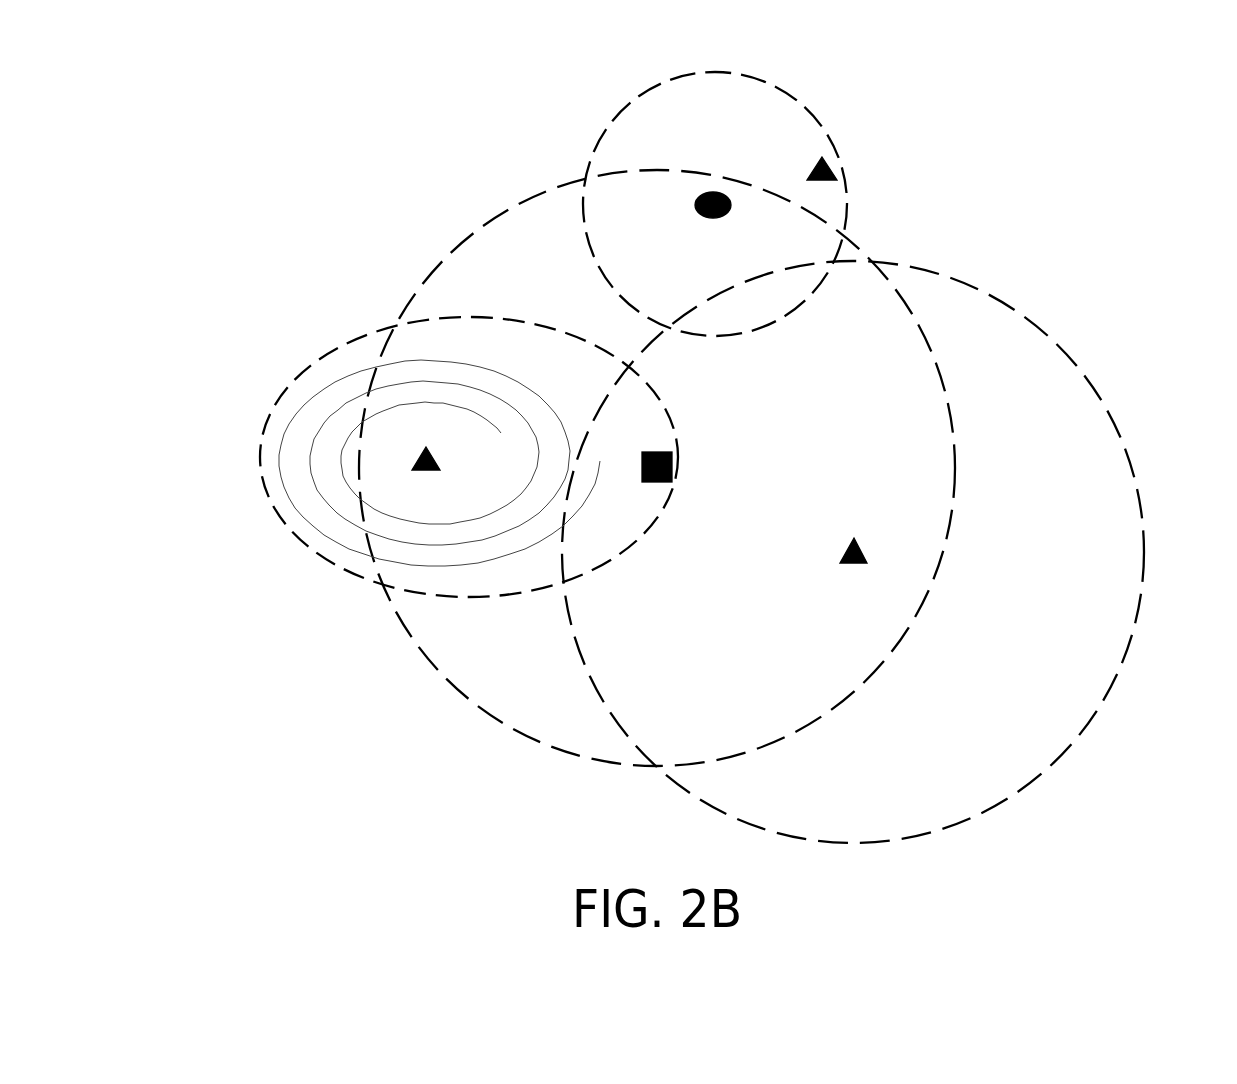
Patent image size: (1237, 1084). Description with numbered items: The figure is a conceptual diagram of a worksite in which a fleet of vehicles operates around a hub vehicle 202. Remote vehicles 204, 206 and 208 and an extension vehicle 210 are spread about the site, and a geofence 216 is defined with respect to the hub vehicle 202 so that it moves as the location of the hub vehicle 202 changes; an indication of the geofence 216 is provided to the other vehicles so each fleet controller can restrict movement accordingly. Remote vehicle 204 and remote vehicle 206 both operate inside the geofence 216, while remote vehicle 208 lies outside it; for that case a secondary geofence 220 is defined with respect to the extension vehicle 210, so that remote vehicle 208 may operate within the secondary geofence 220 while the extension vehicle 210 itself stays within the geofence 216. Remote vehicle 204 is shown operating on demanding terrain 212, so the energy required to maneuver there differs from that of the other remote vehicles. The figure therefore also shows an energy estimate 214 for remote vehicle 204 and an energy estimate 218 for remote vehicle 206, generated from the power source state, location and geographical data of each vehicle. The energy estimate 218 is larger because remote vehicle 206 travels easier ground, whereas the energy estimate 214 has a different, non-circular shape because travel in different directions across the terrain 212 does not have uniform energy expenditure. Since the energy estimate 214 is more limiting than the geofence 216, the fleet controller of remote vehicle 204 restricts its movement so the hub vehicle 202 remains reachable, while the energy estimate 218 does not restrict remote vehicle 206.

The hub vehicle 202 is at (655, 482).
The remote vehicle 204 is at (440, 463).
The remote vehicle 206 is at (841, 556).
The remote vehicle 208 is at (838, 172).
The extension vehicle 210 is at (693, 205).
The terrain 212 is at (332, 417).
The energy estimate 214 is at (260, 458).
The geofence 216 is at (955, 450).
The energy estimate 218 is at (1144, 553).
The secondary geofence 220 is at (808, 113).